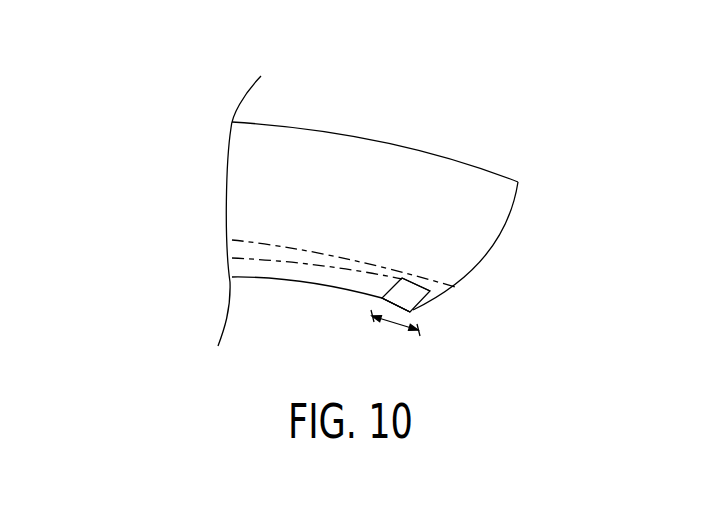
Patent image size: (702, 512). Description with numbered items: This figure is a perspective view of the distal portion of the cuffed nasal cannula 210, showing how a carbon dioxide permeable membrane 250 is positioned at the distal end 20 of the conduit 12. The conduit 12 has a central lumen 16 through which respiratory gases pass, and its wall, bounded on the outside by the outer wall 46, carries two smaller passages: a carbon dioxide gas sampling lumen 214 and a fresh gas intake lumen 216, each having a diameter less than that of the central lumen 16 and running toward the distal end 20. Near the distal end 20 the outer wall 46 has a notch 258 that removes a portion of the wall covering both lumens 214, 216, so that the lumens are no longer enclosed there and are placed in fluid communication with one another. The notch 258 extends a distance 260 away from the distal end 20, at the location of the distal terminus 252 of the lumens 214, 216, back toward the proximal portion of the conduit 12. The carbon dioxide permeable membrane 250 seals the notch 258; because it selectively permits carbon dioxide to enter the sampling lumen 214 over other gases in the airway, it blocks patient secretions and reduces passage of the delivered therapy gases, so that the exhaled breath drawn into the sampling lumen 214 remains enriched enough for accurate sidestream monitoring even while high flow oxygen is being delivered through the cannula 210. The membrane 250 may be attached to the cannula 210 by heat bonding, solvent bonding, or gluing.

The nasal cannula 210 is at (207, 87).
The conduit 12 is at (341, 121).
The outer wall 46 is at (279, 144).
The distal end 20 is at (518, 208).
The central lumen 16 is at (513, 259).
The CO2 gas sampling lumen 214 is at (369, 269).
The fresh gas intake lumen 216 is at (289, 274).
The notch 258 is at (432, 285).
The CO2-permeable membrane 250 is at (422, 302).
The distal terminus 252 is at (413, 311).
The distance 260 is at (394, 327).